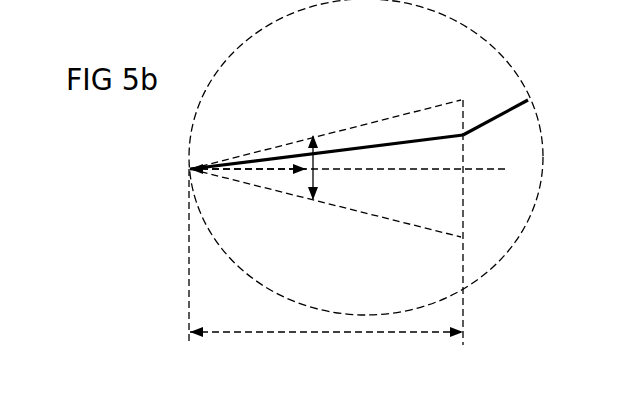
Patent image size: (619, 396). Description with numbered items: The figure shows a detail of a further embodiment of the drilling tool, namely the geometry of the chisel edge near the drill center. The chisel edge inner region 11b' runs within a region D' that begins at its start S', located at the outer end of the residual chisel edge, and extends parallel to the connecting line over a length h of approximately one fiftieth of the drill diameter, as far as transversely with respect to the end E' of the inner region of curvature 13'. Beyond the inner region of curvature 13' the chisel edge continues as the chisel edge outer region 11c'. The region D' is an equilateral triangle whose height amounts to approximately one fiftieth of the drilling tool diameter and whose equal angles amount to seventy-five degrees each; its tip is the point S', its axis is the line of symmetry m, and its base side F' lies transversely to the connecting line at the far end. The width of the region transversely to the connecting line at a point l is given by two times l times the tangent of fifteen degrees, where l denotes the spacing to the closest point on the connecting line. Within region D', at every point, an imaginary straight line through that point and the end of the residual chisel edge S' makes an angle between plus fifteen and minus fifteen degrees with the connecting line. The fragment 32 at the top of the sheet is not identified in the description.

The partial numeral fragment 32 is at (61, 6).
The tip S' is at (175, 235).
The chisel edge inner region 11b' is at (326, 108).
The chisel edge outer region 11c' is at (495, 72).
The inner region of curvature 13' is at (464, 199).
The triangle D' is at (325, 91).
The line of symmetry m is at (362, 170).
The length I is at (250, 169).
The end point E' is at (535, 160).
The base side F' is at (381, 207).
The height h is at (326, 346).